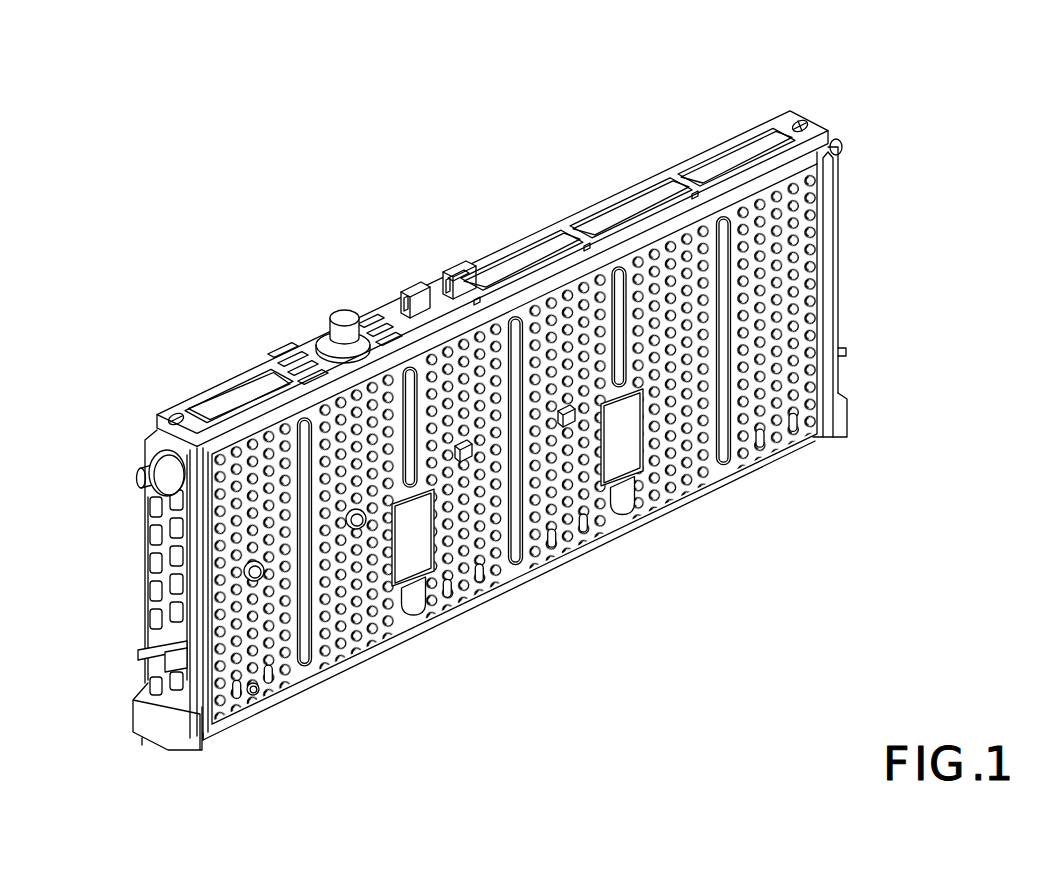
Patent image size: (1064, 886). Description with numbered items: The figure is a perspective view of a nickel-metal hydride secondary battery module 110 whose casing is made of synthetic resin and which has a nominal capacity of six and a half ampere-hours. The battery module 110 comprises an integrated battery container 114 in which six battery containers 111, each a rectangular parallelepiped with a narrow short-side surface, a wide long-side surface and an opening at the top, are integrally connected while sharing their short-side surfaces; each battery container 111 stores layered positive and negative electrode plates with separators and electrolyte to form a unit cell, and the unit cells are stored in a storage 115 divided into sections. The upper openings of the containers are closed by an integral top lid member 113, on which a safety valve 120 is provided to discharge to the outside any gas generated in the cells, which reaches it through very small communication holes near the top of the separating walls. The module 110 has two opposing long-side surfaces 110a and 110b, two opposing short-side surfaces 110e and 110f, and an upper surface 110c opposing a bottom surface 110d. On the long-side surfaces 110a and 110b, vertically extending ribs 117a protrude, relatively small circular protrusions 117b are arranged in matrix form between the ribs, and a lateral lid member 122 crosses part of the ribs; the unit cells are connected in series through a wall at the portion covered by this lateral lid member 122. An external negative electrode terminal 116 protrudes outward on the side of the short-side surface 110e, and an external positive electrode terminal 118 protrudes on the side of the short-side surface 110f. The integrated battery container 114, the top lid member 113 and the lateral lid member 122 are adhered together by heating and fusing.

The battery module 110 is at (648, 148).
The long-side surface 110a is at (400, 622).
The long-side surface 110b is at (381, 305).
The upper surface 110c is at (751, 150).
The bottom surface 110d is at (808, 452).
The short-side surface 110e is at (147, 560).
The short-side surface 110f is at (870, 306).
The battery container 111 is at (730, 452).
The top lid member 113 is at (174, 408).
The integrated battery container 114 is at (266, 686).
The storage 115 is at (832, 438).
The external negative electrode terminal 116 is at (149, 468).
The rib 117a is at (367, 640).
The circular protrusion 117b is at (254, 692).
The external positive electrode terminal 118 is at (843, 148).
The safety valve 120 is at (337, 305).
The lateral lid member 122 is at (622, 463).